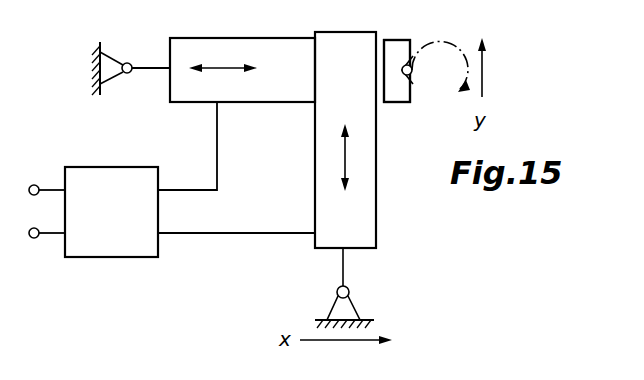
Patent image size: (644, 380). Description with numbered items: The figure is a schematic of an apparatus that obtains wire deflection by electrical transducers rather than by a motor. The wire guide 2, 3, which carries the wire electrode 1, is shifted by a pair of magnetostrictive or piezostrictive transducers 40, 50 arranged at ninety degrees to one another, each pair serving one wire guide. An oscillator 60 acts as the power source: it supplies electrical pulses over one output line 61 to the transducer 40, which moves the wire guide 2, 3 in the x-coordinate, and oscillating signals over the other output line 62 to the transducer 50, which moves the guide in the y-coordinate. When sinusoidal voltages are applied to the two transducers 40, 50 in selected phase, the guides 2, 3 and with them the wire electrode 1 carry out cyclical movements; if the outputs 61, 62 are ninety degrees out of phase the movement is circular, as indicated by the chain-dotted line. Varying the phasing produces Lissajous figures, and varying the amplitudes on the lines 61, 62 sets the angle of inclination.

The wire electrode 1 is at (412, 70).
The wire guide 2 is at (395, 104).
The wire guide 3 is at (397, 71).
The transducer 40 is at (278, 103).
The transducer 50 is at (377, 205).
The oscillator 60 is at (108, 166).
The output line of oscillator 61 is at (217, 150).
The output line of oscillator 62 is at (252, 232).